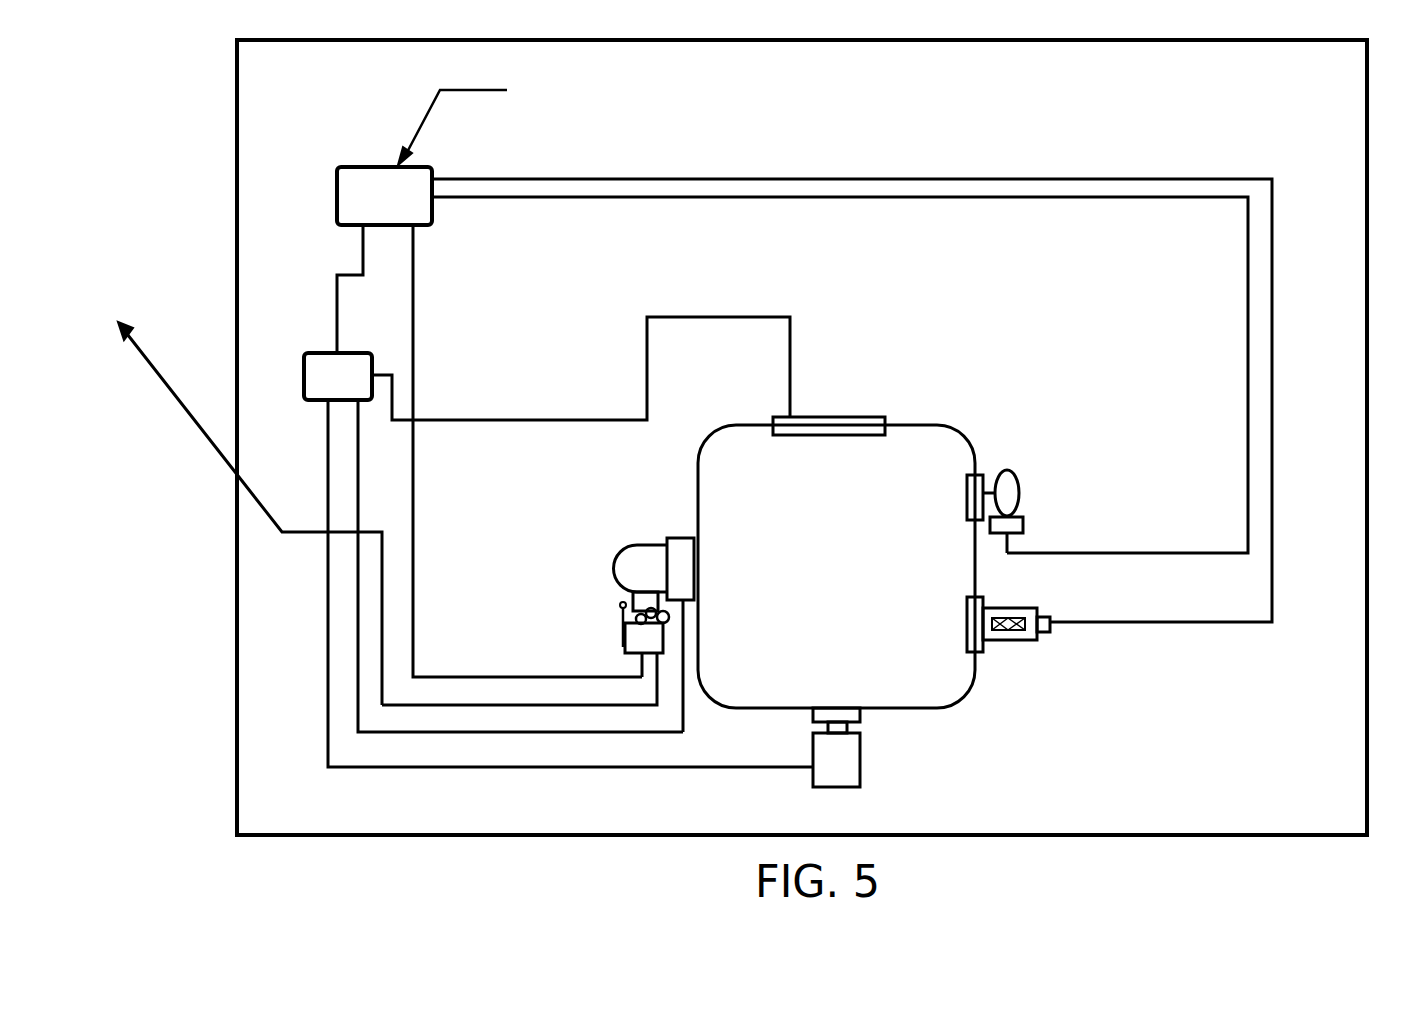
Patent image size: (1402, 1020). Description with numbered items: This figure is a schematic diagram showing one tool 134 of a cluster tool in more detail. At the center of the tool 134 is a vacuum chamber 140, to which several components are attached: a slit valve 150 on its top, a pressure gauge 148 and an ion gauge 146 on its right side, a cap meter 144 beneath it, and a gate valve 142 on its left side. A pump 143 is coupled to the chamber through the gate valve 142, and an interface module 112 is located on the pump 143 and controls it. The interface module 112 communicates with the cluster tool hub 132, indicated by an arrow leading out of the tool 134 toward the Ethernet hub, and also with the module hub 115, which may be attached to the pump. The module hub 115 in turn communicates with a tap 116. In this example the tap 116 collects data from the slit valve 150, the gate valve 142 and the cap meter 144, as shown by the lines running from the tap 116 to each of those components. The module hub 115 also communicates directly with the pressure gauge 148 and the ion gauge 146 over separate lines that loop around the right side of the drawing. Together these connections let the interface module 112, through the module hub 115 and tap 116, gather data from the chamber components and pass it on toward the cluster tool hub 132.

The tool 134 is at (307, 87).
The module hub 115 is at (422, 166).
The tap 116 is at (316, 352).
The cluster tool hub 132 is at (235, 465).
The vacuum chamber 140 is at (860, 680).
The slit valve 150 is at (860, 416).
The pressure gauge 148 is at (1018, 488).
The ion gauge 146 is at (1040, 645).
The gate valve 142 is at (677, 545).
The pump 143 is at (614, 553).
The interface module 112 is at (620, 637).
The cap meter 144 is at (853, 758).